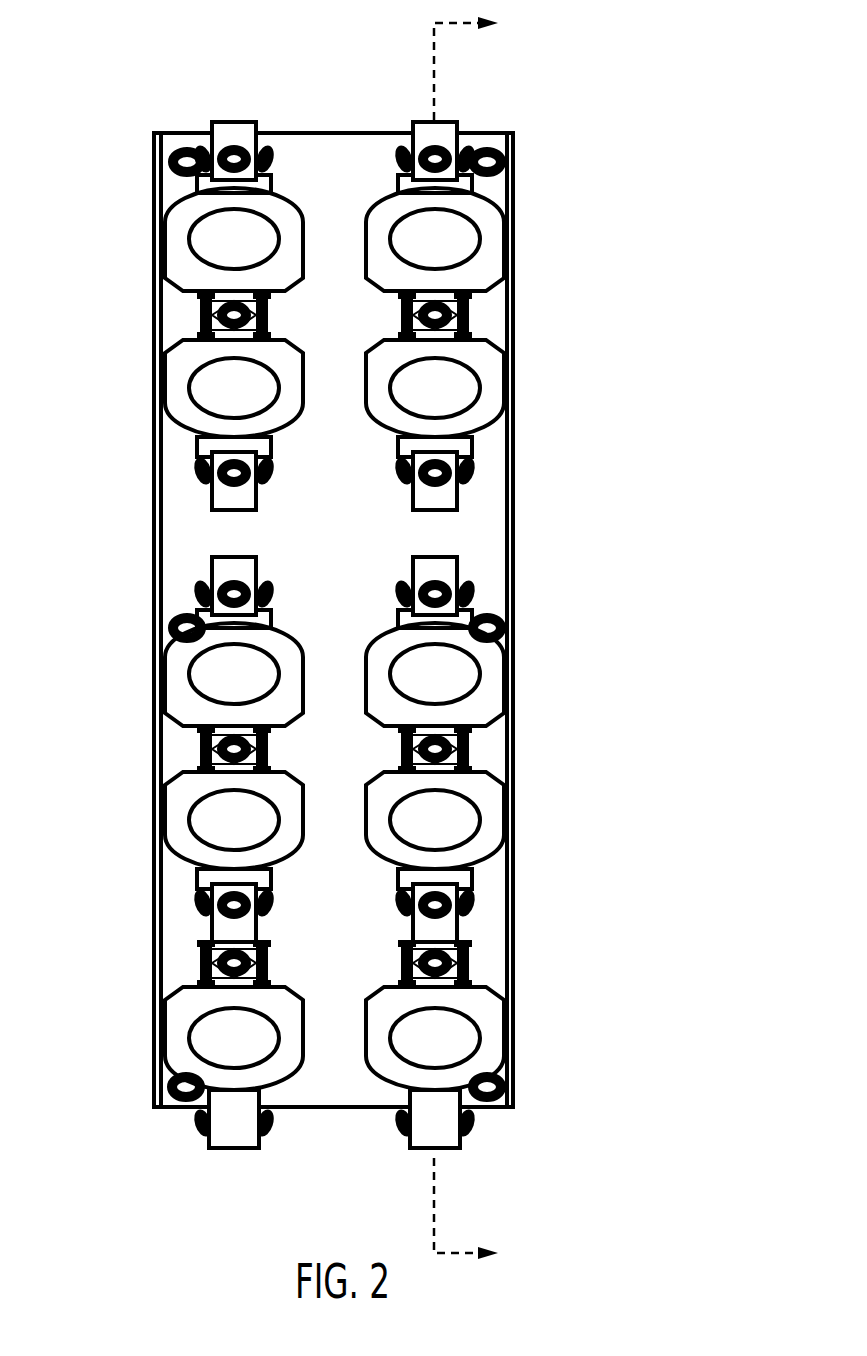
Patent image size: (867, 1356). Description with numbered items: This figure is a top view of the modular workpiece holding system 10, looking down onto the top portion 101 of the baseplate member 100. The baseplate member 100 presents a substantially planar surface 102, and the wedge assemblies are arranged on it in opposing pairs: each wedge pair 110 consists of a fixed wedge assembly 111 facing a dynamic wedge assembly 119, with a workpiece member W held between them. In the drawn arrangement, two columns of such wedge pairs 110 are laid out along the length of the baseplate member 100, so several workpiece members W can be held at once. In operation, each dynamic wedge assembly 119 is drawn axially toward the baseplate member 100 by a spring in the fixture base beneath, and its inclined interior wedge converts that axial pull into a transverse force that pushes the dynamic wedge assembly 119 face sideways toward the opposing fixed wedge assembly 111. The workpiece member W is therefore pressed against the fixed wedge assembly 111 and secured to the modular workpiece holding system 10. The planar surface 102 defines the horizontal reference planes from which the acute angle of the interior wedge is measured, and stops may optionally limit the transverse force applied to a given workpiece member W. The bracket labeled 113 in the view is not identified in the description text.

The modular workpiece holding system 10 is at (372, 638).
The baseplate member 100 is at (492, 133).
The top portion 101 is at (178, 532).
The planar surface 102 is at (504, 335).
The wedge pair 110 is at (392, 888).
The fixed wedge assembly 111 is at (467, 448).
The terminal end 113 is at (330, 1158).
The dynamic wedge assembly 119 is at (505, 311).
The workpiece member W is at (492, 368).